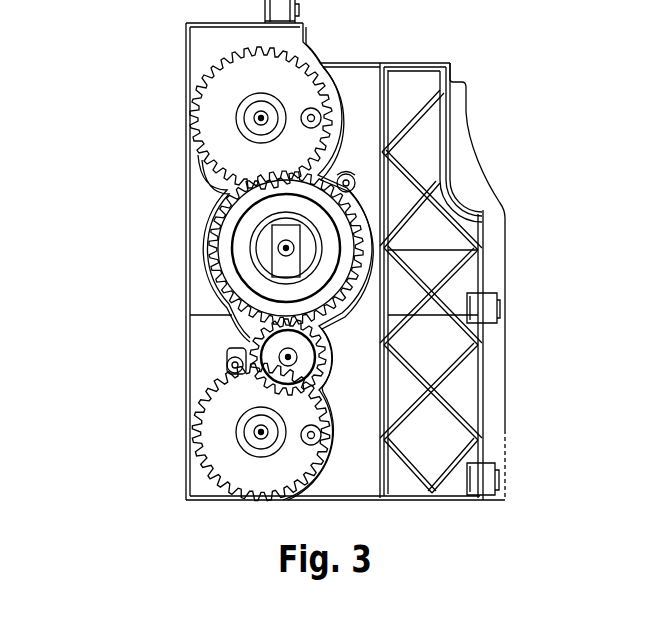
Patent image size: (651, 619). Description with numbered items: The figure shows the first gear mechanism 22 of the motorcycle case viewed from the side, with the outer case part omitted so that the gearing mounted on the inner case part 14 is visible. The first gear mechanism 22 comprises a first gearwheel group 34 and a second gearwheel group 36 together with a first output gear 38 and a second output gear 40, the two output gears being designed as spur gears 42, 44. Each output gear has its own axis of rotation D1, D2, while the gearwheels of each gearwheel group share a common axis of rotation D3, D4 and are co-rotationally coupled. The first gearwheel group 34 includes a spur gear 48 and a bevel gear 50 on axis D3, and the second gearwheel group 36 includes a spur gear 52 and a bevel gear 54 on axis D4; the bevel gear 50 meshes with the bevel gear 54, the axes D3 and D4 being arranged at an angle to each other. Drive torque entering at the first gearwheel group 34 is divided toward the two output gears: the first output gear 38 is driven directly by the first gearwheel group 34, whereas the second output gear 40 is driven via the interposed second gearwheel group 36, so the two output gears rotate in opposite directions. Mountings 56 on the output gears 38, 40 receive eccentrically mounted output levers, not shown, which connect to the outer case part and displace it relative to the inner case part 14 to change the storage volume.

The inner case part 14 is at (203, 38).
The first gear mechanism 22 is at (160, 500).
The first gearwheel group 34 is at (183, 250).
The second gearwheel group 36 is at (275, 343).
The first output gear 38 is at (235, 86).
The spur gear 42 is at (211, 118).
The second output gear 40 is at (245, 465).
The spur gear 44 is at (210, 431).
The spur gear 48 is at (356, 229).
The bevel gear 50 is at (352, 206).
The spur gear 52 is at (313, 325).
The bevel gear 54 is at (330, 361).
The mountings 56 is at (312, 117).
The axis of rotation D1 is at (261, 118).
The axis of rotation D2 is at (261, 432).
The axis of rotation D3 is at (288, 248).
The axis of rotation D4 is at (288, 357).